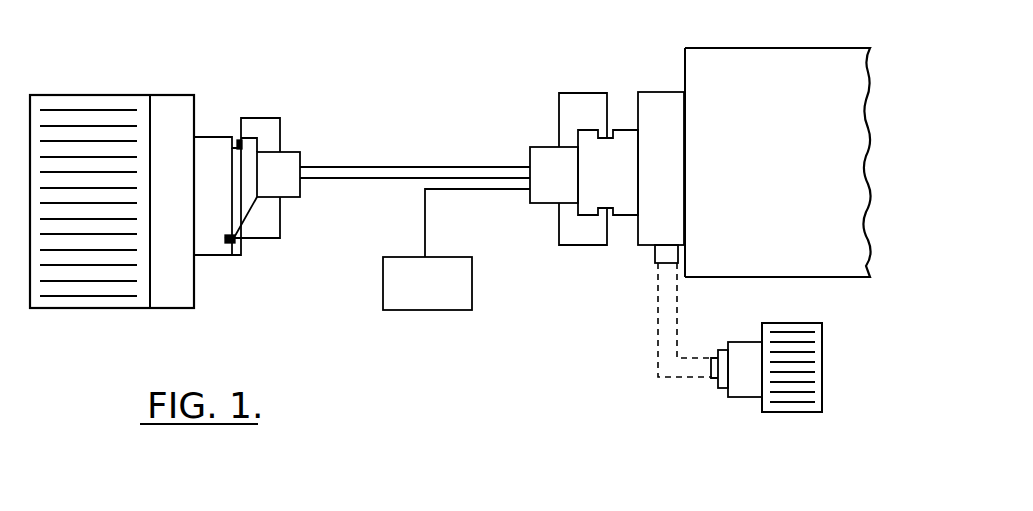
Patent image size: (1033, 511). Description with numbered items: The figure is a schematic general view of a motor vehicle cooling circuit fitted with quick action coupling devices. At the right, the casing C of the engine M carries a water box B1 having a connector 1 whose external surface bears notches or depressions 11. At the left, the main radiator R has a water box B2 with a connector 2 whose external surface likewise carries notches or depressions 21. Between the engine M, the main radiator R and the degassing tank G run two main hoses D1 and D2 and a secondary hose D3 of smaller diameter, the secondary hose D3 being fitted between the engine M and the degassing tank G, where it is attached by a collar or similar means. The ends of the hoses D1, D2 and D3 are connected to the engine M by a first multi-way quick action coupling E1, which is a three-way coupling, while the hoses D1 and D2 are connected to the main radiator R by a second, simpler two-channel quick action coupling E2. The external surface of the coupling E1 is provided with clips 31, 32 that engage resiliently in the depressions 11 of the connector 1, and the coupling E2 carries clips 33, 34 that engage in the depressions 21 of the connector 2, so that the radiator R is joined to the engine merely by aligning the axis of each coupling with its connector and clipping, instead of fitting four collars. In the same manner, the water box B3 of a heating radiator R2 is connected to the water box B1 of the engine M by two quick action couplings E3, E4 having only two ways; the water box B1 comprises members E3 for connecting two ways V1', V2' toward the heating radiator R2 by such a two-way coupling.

The main radiator R is at (140, 316).
The heating radiator R2 is at (779, 418).
The water box B2 is at (188, 308).
The connector 2 is at (218, 137).
The notches or depressions 21 is at (240, 119).
The clip 33 is at (281, 118).
The clip 34 is at (282, 223).
The second multi-way quick action coupling E2 is at (293, 168).
The main hose D1 is at (383, 167).
The main hose D2 is at (358, 178).
The secondary hose D3 is at (425, 216).
The degassing tank G is at (445, 298).
The first multi-way quick action coupling E1 is at (552, 158).
The clip 31 is at (593, 93).
The clip 32 is at (590, 245).
The connector 1 is at (614, 186).
The notches or depressions 11 is at (608, 215).
The water box B1 is at (655, 93).
The water box B3 is at (743, 348).
The casing C is at (699, 68).
The engine M is at (790, 48).
The quick action coupling E3 is at (653, 263).
The quick action coupling E4 is at (712, 386).
The way V1' is at (700, 310).
The way V2' is at (666, 344).